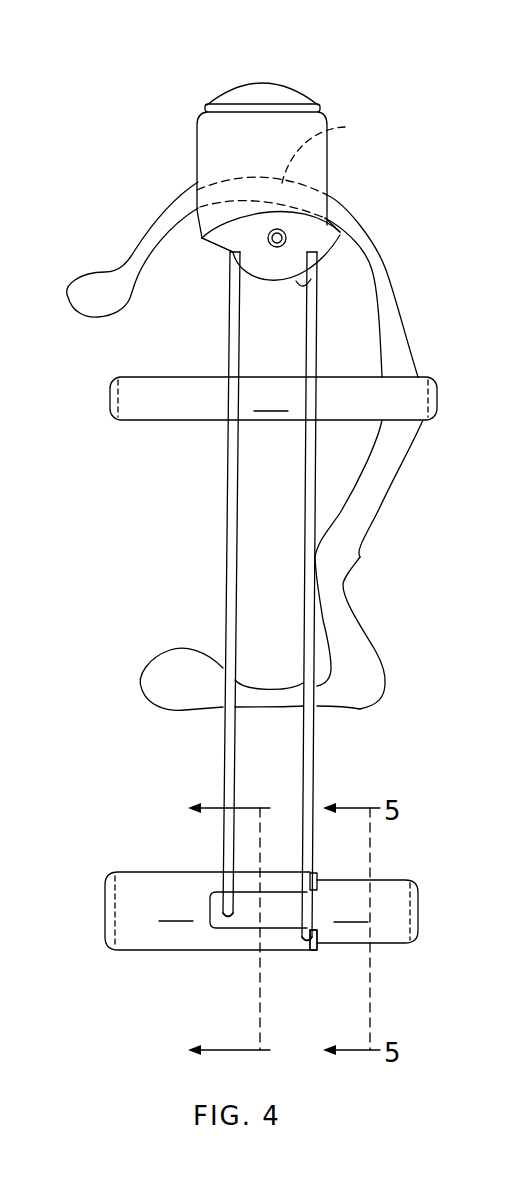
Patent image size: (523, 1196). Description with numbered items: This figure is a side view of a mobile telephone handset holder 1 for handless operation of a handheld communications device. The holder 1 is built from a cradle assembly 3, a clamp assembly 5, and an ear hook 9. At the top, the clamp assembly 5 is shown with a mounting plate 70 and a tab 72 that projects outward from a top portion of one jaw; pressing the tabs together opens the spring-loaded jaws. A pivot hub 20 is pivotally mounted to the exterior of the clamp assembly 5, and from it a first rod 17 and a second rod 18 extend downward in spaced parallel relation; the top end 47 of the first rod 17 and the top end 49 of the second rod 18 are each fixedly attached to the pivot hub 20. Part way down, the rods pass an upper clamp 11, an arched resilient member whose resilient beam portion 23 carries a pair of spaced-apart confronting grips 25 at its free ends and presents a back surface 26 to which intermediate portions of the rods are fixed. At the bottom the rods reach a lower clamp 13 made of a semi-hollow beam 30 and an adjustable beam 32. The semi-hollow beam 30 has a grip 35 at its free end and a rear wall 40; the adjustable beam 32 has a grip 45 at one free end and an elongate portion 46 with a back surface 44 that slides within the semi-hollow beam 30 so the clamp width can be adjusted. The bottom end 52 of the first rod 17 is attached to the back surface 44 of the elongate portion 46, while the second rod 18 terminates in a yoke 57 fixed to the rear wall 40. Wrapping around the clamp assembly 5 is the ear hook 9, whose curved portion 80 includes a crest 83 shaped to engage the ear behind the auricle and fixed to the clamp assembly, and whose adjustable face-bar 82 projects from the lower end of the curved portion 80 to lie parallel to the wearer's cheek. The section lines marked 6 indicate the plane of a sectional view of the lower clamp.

The mobile telephone handset holder 1 is at (130, 488).
The cradle assembly 3 is at (195, 532).
The clamp assembly 5 is at (275, 119).
The section line 6- 6 is at (240, 932).
The ear hook 9 is at (393, 653).
The upper clamp 11 is at (343, 372).
The lower clamp 13 is at (268, 914).
The first rod 17 is at (193, 632).
The second rod 18 is at (338, 634).
The pivot hub 20 is at (303, 233).
The resilient beam portion 23 is at (273, 398).
The grips 25 is at (108, 397).
The back surface 26 is at (271, 398).
The semi-hollow beam 30 is at (183, 922).
The adjustable beam 32 is at (395, 902).
The grip 35 is at (105, 915).
The rear wall 40 is at (140, 917).
The back surface 44 is at (351, 909).
The grip 45 is at (422, 907).
The elongate portion 46 is at (327, 930).
The top end 47 is at (228, 250).
The top end 49 is at (340, 232).
The bottom end 52 is at (233, 915).
The yoke 57 is at (310, 945).
The mounting plate 70 is at (218, 132).
The tab 72 is at (260, 97).
The curved portion 80 is at (167, 207).
The face-bar 82 is at (268, 693).
The crest 83 is at (345, 127).